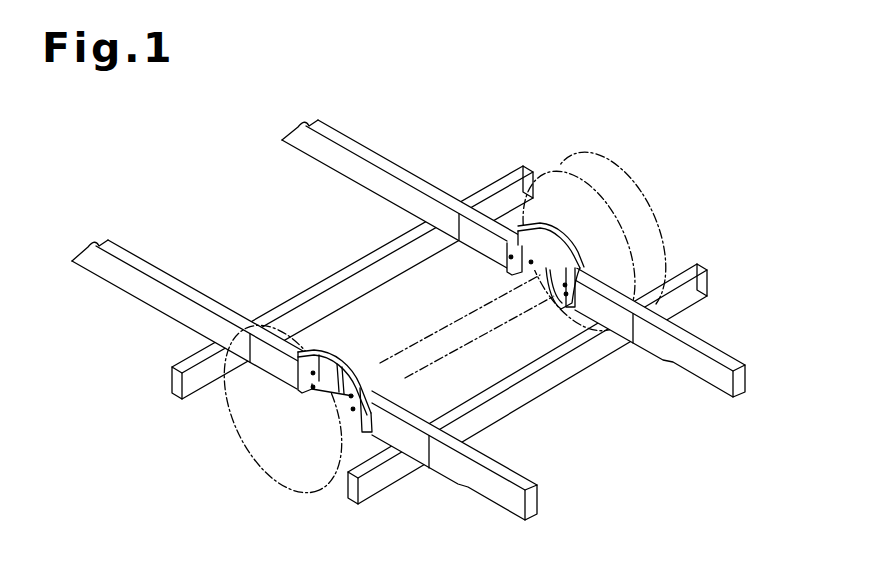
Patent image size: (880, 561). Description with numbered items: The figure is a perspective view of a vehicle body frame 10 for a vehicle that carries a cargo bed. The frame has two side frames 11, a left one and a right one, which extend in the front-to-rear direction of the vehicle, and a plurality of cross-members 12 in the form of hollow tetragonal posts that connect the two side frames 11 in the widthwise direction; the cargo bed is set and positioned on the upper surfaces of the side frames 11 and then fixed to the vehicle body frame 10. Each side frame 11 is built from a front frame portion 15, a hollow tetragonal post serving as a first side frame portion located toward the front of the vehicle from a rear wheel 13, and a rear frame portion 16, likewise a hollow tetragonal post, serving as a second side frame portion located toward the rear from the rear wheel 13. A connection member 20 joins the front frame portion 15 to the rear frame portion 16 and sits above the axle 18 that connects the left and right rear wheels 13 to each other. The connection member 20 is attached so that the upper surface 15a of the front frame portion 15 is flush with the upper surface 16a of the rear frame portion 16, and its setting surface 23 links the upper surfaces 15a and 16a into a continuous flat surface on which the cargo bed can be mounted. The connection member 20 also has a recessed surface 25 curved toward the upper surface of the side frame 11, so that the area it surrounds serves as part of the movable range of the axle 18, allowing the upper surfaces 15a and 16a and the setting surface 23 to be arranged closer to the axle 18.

The vehicle body frame 10 is at (160, 140).
The side frame 11 is at (336, 128).
The cross member 12 is at (335, 283).
The rear wheel 13 is at (622, 163).
The front frame portion 15 is at (395, 159).
The upper surface of the front frame portion 15a is at (434, 190).
The rear frame portion 16 is at (710, 341).
The upper surface of the rear frame portion 16a is at (740, 360).
The axle 18 is at (404, 352).
The connection member 20 is at (505, 264).
The setting surface 23 is at (551, 240).
The recessed surface 25 is at (546, 292).